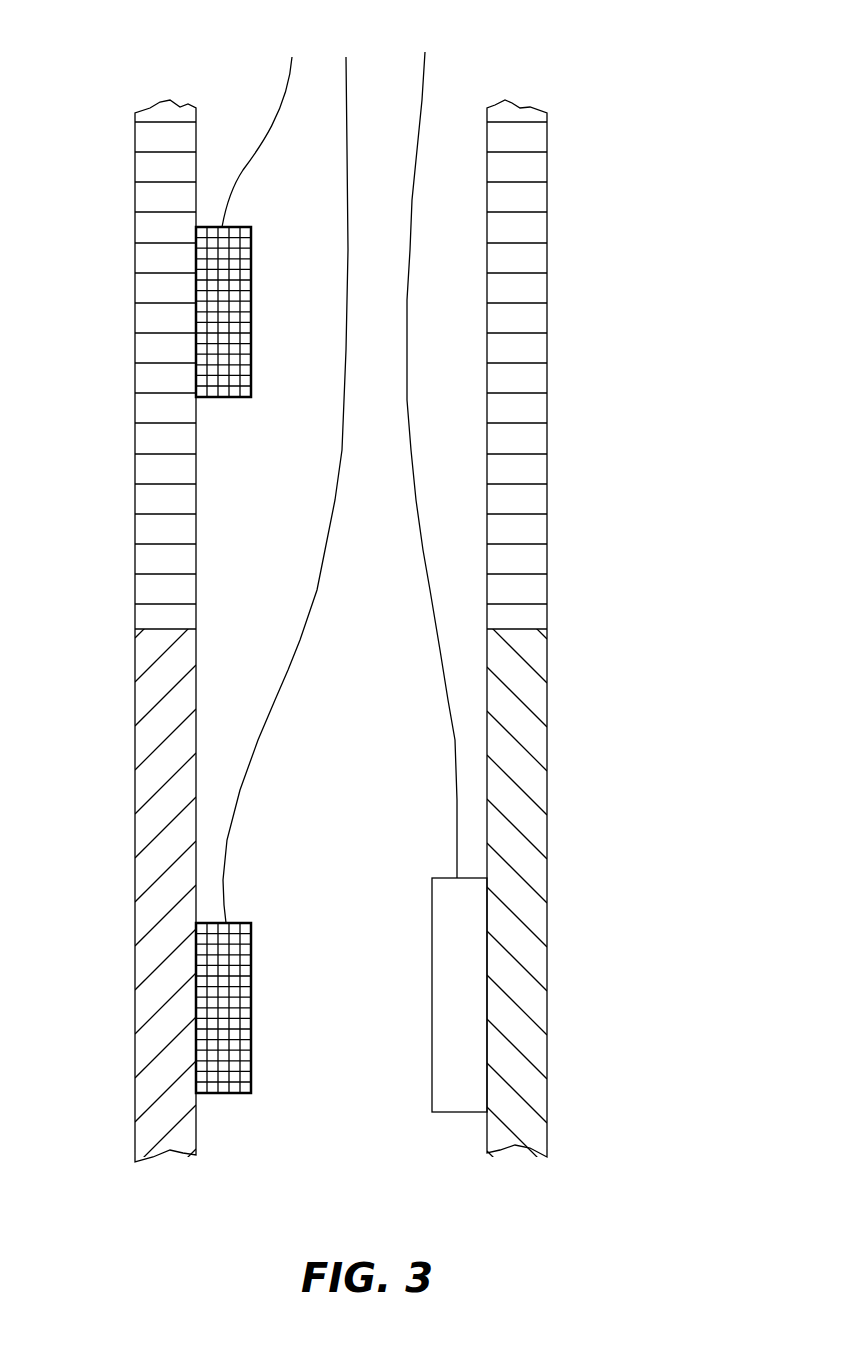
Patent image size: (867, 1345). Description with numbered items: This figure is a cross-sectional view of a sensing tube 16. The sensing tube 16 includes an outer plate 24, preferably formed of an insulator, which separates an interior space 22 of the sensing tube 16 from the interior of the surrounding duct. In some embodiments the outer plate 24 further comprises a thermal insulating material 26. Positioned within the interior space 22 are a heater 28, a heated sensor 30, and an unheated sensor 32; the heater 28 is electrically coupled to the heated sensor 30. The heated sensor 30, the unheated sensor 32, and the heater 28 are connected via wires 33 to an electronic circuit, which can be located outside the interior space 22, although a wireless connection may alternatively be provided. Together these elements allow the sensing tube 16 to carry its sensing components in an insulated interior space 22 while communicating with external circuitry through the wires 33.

The sensing tube 16 is at (394, 609).
The interior space 22 is at (271, 609).
The outer plate 24 is at (147, 828).
The thermal insulating material 26 is at (527, 255).
The heater 28 is at (450, 1035).
The heated sensor 30 is at (207, 1024).
The unheated sensor 32 is at (208, 295).
The wires 33 is at (459, 55).